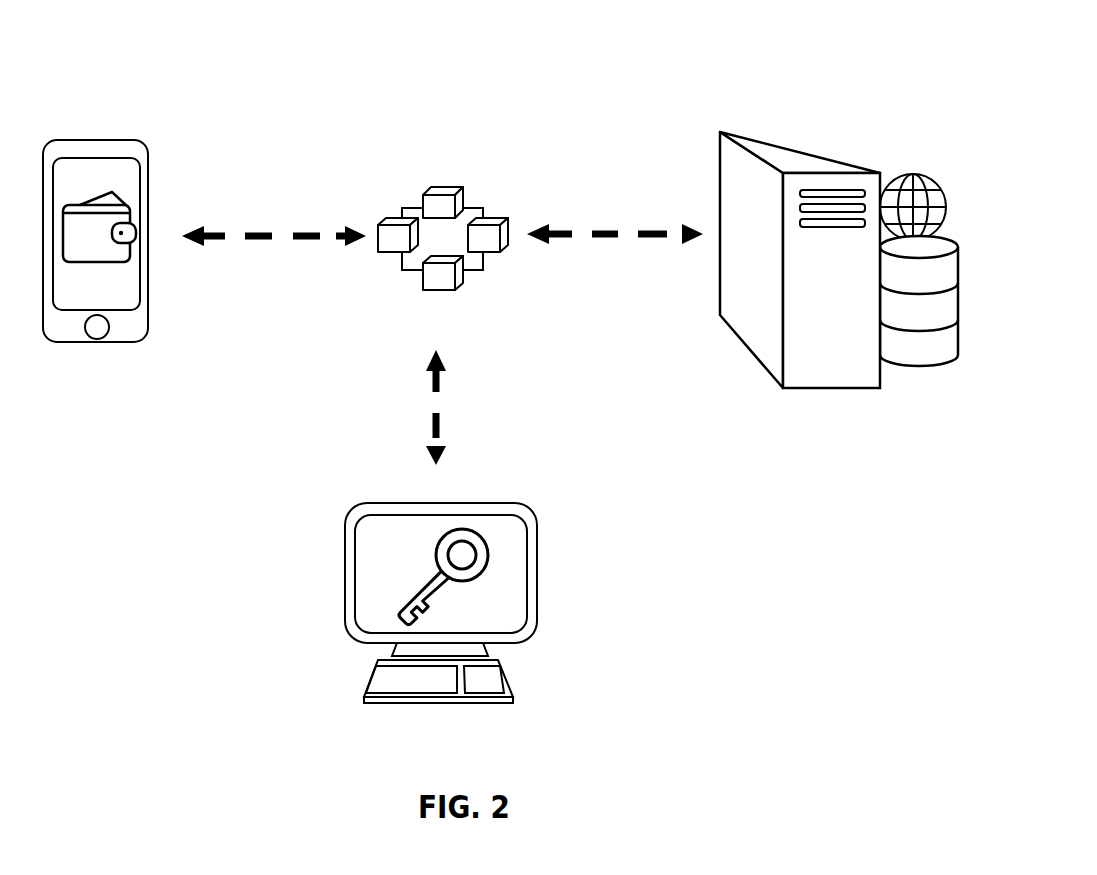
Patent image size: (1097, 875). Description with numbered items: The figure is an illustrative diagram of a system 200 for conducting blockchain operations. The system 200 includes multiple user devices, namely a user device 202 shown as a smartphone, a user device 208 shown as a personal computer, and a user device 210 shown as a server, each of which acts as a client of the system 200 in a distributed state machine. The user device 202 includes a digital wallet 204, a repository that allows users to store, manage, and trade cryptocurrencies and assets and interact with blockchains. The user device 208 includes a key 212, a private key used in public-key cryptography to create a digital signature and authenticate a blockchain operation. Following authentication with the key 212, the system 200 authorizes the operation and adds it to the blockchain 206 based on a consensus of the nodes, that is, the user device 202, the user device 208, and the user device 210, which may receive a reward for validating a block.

The system 200 is at (472, 64).
The user device 202 is at (125, 256).
The digital wallet 204 is at (127, 183).
The blockchain 206 is at (481, 303).
The user device 208 is at (473, 591).
The user device 210 is at (801, 117).
The key 212 is at (412, 536).